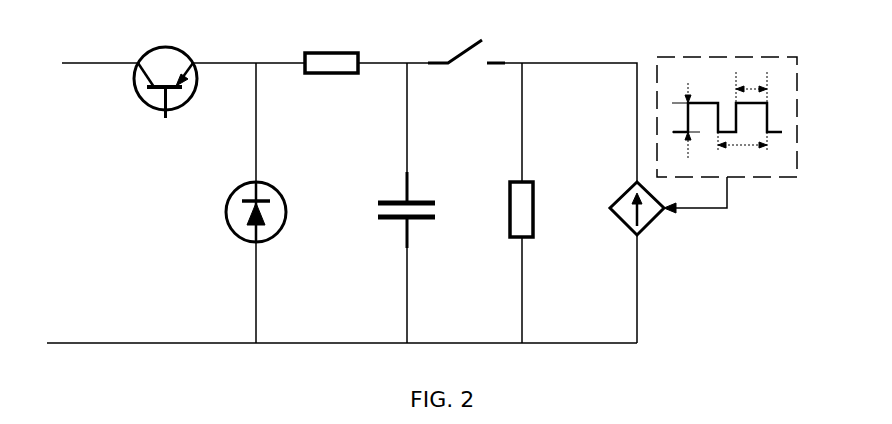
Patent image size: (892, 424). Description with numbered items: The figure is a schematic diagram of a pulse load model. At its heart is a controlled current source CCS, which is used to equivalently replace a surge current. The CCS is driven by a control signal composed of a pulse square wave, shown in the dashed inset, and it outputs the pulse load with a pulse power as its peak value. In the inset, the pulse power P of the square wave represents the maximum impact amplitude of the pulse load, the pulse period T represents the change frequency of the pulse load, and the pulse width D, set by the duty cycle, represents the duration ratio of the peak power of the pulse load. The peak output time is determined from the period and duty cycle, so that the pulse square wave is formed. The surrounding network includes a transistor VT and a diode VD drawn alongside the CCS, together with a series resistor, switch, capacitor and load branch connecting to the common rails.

The transistor VT is at (165, 70).
The diode VD is at (274, 212).
The controlled current source CCS is at (668, 216).
The pulse amplitude P is at (682, 120).
The pulse width (duty) D is at (751, 85).
The pulse period T is at (742, 151).